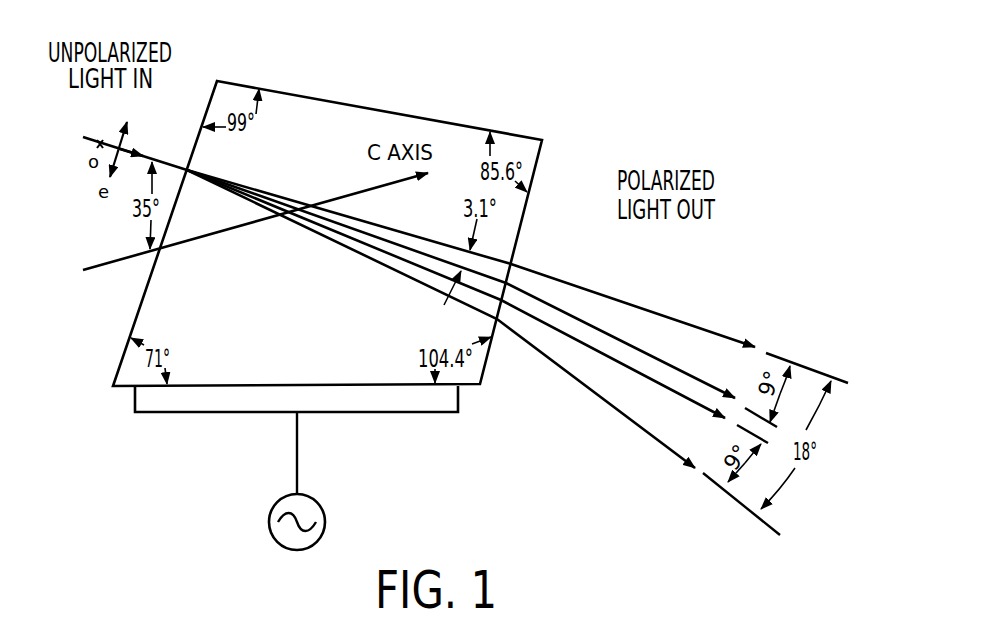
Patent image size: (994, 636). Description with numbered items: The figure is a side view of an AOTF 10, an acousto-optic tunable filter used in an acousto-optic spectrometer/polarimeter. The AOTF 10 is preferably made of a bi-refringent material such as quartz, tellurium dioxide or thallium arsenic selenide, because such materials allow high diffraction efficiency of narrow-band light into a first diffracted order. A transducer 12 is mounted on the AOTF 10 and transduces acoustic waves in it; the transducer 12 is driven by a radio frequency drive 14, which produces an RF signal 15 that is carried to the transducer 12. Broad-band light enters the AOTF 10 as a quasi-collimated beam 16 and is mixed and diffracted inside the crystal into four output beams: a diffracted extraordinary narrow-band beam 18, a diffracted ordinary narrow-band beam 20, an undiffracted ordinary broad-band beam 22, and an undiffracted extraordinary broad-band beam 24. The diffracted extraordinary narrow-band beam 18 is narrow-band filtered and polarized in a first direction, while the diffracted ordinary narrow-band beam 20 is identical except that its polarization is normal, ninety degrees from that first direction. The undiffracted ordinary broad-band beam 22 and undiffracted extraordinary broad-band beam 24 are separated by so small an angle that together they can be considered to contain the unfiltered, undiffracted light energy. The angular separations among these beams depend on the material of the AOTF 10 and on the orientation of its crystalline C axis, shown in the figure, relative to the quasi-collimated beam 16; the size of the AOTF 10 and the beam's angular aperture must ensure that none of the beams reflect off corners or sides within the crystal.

The AOTF 10 is at (313, 122).
The transducer 12 is at (197, 400).
The radio frequency (RF) drive 14 is at (325, 525).
The RF signal 15 is at (297, 460).
The quasi-collimated beam 16 is at (176, 162).
The diffracted extraordinary narrow-band beam 18 is at (620, 301).
The diffracted ordinary narrow-band beam 20 is at (573, 377).
The undiffracted ordinary broad-band beam 22 is at (627, 344).
The undiffracted extraordinary broad-band beam 24 is at (682, 398).